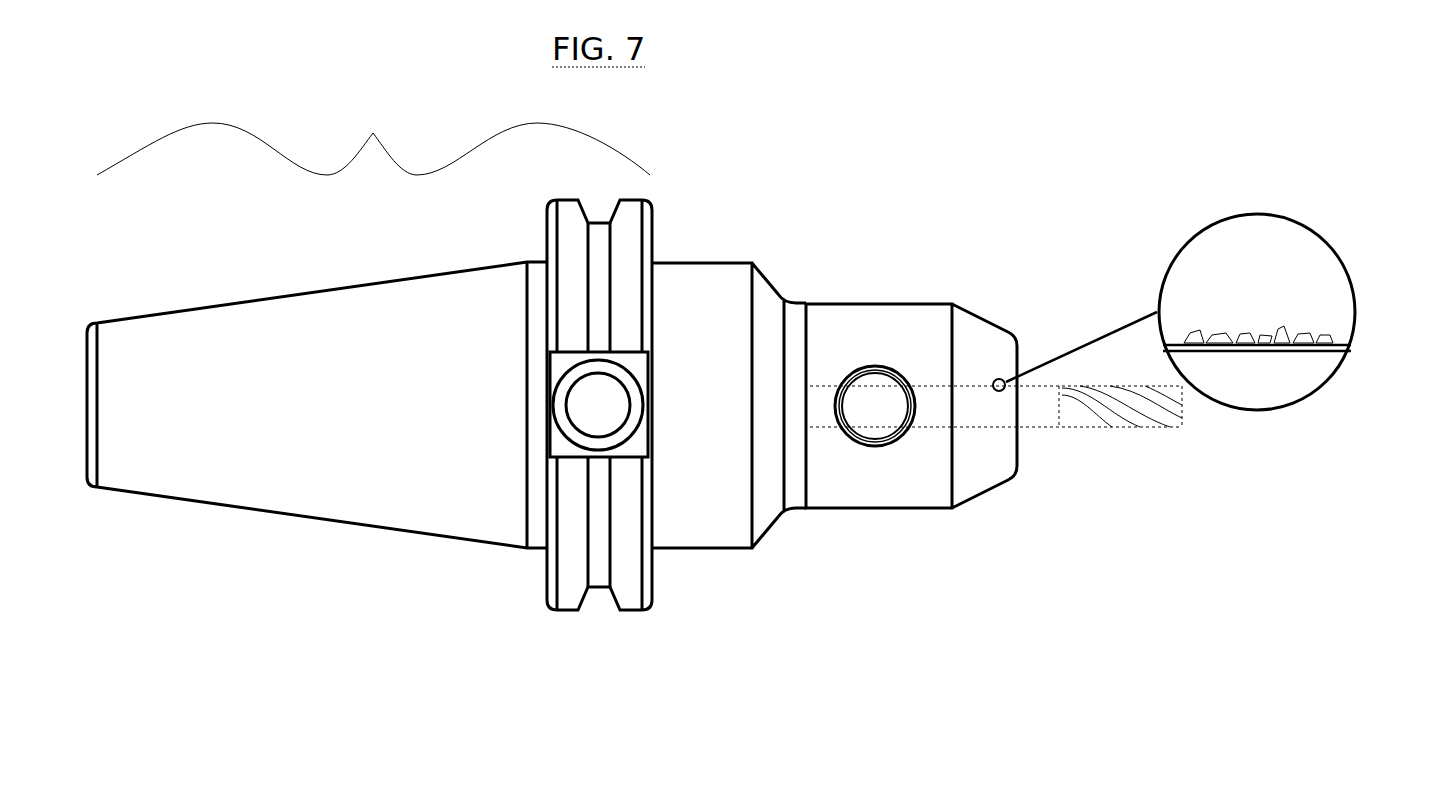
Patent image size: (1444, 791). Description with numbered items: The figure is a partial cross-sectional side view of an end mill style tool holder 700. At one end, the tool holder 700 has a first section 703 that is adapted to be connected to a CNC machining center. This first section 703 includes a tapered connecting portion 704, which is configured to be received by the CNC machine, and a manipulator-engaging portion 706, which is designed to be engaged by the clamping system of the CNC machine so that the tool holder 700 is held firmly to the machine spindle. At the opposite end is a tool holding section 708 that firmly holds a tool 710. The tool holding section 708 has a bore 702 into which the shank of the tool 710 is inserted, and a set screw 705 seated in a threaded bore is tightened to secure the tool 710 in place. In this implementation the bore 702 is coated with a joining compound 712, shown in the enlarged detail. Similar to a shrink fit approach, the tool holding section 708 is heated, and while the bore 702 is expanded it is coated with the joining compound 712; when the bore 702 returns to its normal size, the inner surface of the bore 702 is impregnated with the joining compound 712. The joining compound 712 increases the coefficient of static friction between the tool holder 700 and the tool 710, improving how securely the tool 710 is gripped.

The tool holder 700 is at (711, 243).
The bore 702 is at (968, 403).
The first section 703 is at (373, 135).
The tapered connecting portion 704 is at (272, 355).
The set screw 705 is at (915, 403).
The manipulator-engaging portion 706 is at (650, 623).
The tool holding section 708 is at (1015, 288).
The tool 710 is at (1122, 413).
The joining compound 712 is at (1327, 337).